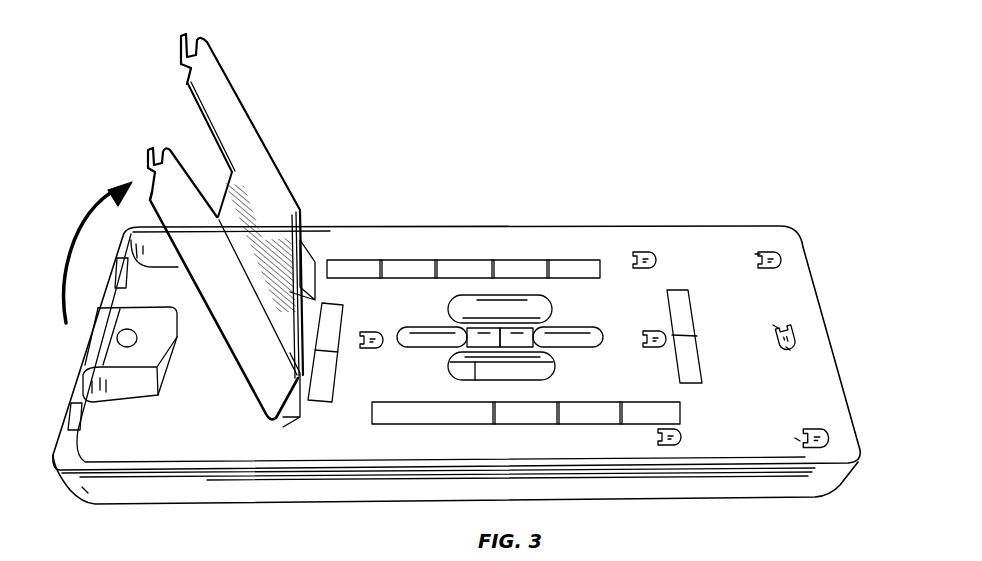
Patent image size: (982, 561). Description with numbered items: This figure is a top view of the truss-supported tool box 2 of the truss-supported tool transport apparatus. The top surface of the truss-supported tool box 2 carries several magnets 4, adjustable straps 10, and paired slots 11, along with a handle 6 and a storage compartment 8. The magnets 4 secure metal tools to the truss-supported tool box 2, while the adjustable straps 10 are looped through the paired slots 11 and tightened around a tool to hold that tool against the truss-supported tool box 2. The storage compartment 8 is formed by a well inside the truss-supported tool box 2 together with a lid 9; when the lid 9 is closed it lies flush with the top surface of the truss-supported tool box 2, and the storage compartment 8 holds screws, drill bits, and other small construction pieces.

The truss-supported tool box 2 is at (651, 209).
The magnets 4 is at (518, 270).
The handle 6 is at (515, 342).
The storage compartment 8 is at (187, 434).
The lid 9 is at (214, 266).
The straps 10 is at (762, 252).
The paired slots 11 is at (757, 262).